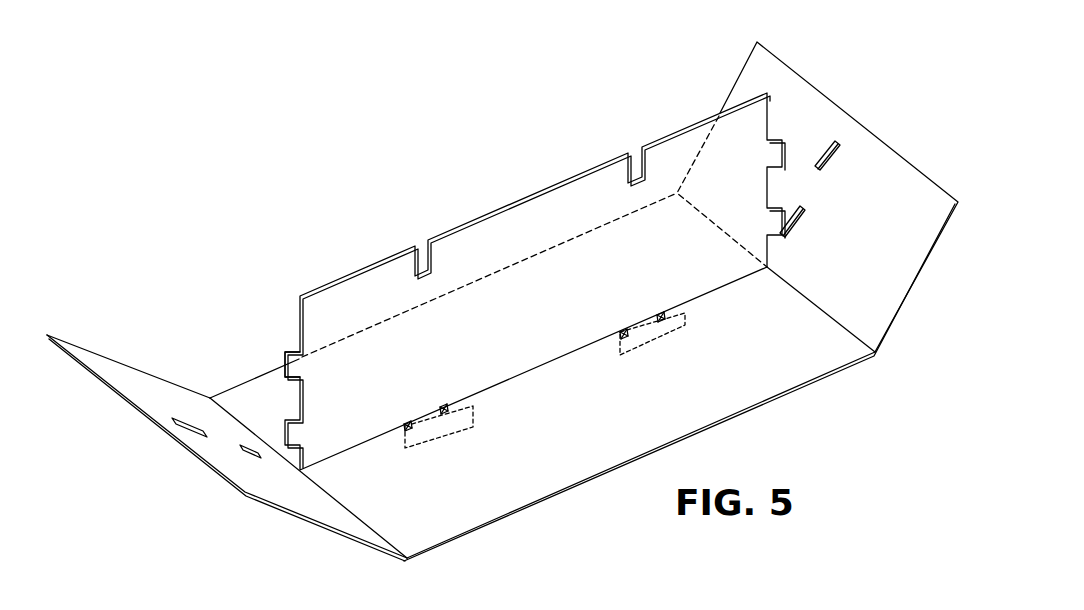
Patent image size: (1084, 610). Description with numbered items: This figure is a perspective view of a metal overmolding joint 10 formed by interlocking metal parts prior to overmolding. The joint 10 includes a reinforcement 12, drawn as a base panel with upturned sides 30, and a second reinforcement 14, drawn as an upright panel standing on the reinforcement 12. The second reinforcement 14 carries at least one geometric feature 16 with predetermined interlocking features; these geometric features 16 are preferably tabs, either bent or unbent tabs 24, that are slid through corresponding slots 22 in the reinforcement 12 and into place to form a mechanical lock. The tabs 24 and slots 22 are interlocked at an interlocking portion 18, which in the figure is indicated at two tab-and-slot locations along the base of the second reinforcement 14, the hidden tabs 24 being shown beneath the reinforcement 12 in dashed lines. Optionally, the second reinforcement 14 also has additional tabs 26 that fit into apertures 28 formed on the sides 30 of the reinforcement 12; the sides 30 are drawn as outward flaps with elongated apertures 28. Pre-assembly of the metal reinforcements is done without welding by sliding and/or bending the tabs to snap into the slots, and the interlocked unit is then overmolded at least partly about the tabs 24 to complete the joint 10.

The metal overmolding joint 10 is at (502, 325).
The reinforcement 12 is at (753, 388).
The second reinforcement 14 is at (506, 281).
The geometric feature 16 is at (663, 342).
The interlocking portion 18 is at (561, 393).
The slot 22 is at (436, 406).
The tab 24 is at (453, 432).
The additional tab 26 is at (287, 362).
The aperture 28 is at (200, 428).
The side 30 is at (180, 443).